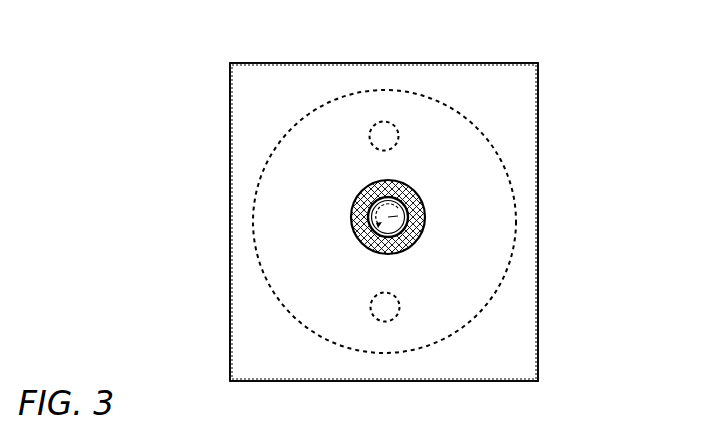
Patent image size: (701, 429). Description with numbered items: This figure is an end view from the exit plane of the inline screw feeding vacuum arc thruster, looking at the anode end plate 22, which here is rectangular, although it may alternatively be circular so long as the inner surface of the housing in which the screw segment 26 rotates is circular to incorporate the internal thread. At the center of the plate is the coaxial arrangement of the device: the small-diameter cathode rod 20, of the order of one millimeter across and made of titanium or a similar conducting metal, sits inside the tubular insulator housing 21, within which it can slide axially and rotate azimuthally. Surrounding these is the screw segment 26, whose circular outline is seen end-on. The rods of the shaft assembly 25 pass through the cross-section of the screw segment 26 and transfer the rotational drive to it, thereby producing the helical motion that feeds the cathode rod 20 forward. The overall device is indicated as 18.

The mounting assembly 18 is at (628, 83).
The cathode rod 20 is at (425, 216).
The tubular insulator housing 21 is at (351, 218).
The anode end plate 22 is at (538, 253).
The shaft assembly 25 is at (386, 121).
The screw segment 26 is at (262, 271).